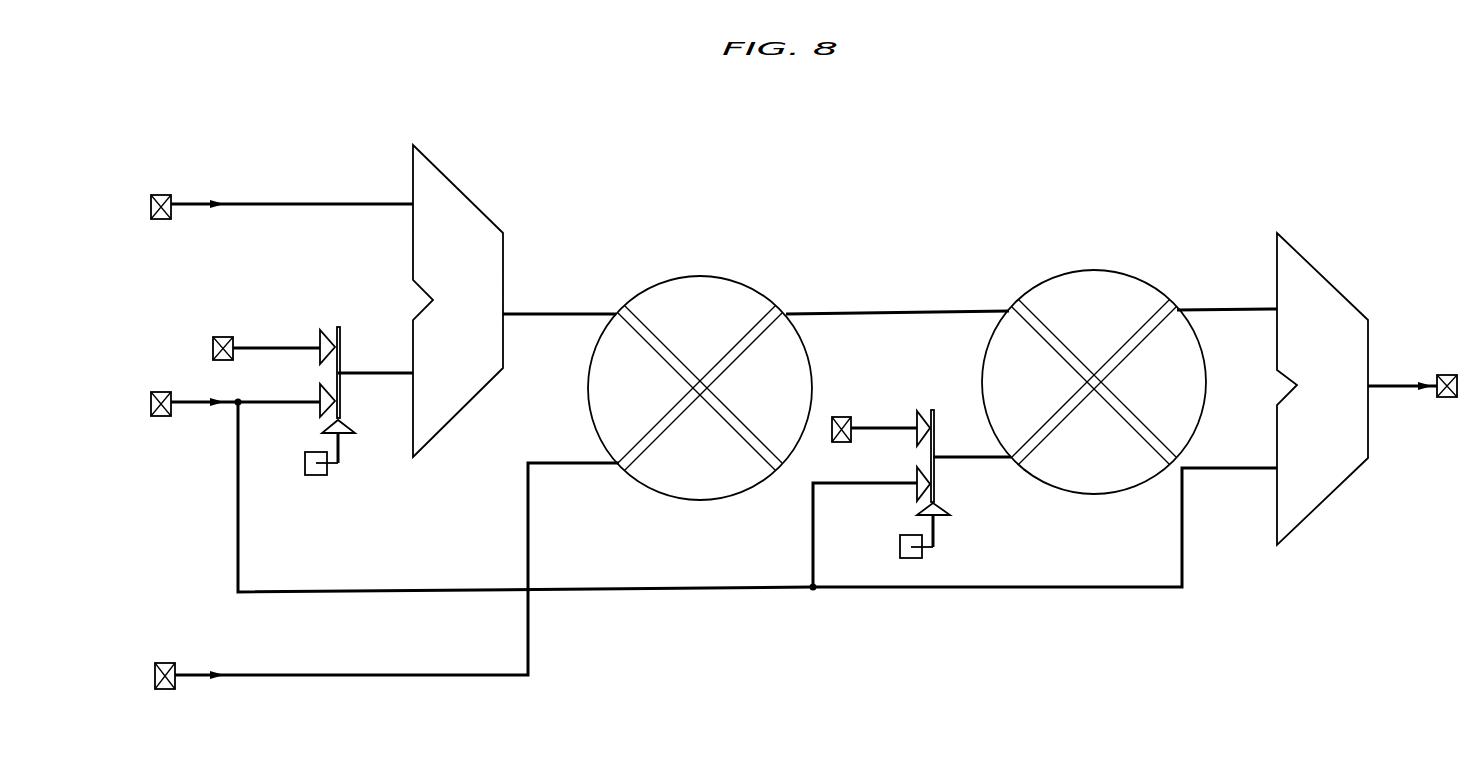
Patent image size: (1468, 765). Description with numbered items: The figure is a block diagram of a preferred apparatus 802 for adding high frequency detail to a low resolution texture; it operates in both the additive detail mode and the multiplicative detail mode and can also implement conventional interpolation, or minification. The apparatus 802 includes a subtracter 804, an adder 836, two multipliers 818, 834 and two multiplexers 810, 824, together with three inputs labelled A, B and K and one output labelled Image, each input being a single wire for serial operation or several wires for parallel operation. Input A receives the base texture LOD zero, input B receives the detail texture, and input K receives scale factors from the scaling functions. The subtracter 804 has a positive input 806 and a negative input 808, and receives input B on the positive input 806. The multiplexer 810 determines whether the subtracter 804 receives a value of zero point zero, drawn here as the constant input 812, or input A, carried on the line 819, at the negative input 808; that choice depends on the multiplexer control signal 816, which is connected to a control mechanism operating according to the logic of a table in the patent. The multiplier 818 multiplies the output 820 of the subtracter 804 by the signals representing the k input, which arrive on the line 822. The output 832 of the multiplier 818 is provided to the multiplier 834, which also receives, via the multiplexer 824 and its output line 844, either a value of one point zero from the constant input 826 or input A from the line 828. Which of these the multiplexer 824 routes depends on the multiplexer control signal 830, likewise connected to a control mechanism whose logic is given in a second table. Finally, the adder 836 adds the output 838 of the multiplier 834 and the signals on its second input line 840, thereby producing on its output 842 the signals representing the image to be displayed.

The apparatus 802 is at (638, 124).
The subtracter 804 is at (462, 192).
The positive input 806 is at (293, 202).
The negative input 808 is at (383, 375).
The multiplexer 810 is at (340, 328).
The constant 0.0 input 812 is at (300, 345).
The multiplexer control signal 816 is at (335, 465).
The multiplier 818 is at (722, 278).
The LOD 0 input A line 819 is at (263, 403).
The output of the subtracter 820 is at (524, 313).
The k input line 822 is at (553, 463).
The multiplexer 824 is at (935, 410).
The constant 1.0 input 826 is at (870, 428).
The multiplexer input line from A 828 is at (862, 485).
The multiplexer control signal 830 is at (933, 547).
The output of the multiplier 832 is at (928, 312).
The multiplier 834 is at (1115, 270).
The adder 836 is at (1318, 275).
The output of the multiplier 838 is at (1256, 310).
The adder second input line 840 is at (1258, 468).
The image output 842 is at (1390, 388).
The second multiplexer output line 844 is at (975, 458).